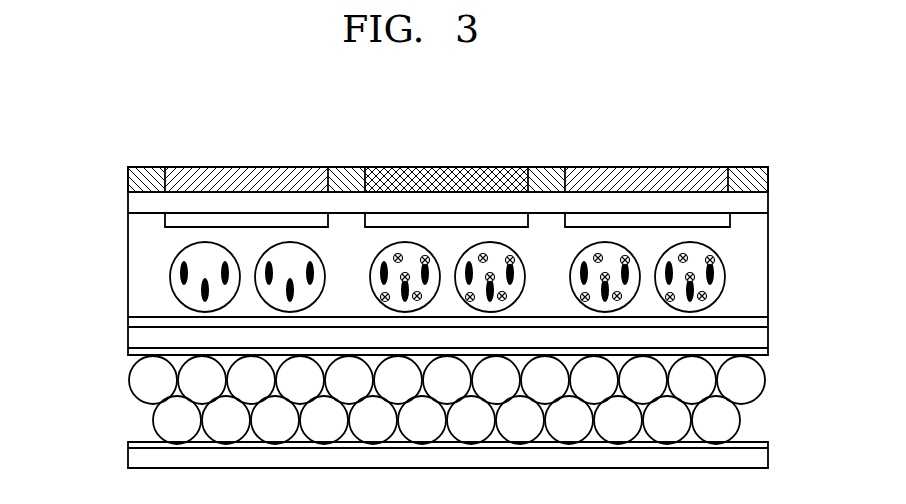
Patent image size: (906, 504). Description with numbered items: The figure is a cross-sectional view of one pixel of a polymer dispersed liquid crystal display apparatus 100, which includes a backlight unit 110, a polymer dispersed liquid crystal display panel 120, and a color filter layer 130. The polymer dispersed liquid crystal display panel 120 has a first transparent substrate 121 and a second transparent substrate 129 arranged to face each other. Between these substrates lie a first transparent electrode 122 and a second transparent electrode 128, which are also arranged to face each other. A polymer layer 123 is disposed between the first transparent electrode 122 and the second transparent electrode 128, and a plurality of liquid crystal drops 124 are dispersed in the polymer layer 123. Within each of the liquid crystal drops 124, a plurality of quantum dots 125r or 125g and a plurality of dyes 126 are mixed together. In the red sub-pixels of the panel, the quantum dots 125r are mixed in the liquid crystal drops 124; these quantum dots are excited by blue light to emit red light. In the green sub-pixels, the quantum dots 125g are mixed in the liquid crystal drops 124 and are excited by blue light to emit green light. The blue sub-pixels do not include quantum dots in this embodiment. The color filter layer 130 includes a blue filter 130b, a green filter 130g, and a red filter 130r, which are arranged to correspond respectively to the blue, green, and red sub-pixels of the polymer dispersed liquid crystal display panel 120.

The polymer dispersed liquid crystal display apparatus 100 is at (83, 123).
The backlight unit 110 is at (777, 343).
The polymer dispersed liquid crystal display panel 120 is at (110, 269).
The first transparent substrate 121 is at (768, 343).
The first transparent electrode 122 is at (768, 322).
The polymer layer 123 is at (768, 298).
The liquid crystal drops 124 is at (726, 286).
The quantum dots 125g is at (398, 253).
The quantum dots 125r is at (600, 253).
The dyes 126 is at (726, 268).
The second transparent electrode 128 is at (730, 221).
The second transparent substrate 129 is at (768, 200).
The color filter layer 130 is at (129, 177).
The blue filter 130b is at (243, 176).
The green filter 130g is at (452, 175).
The red filter 130r is at (655, 175).